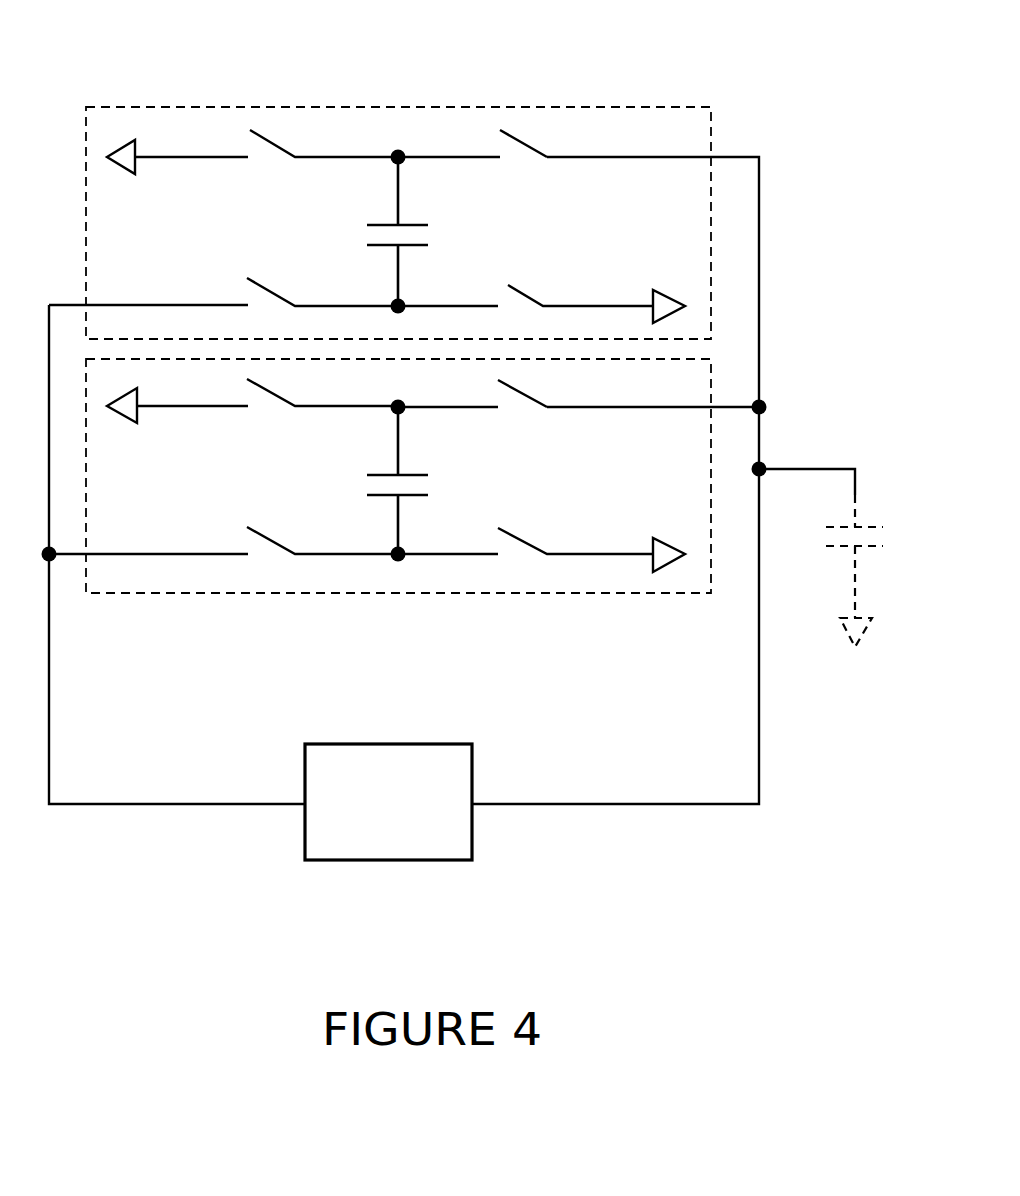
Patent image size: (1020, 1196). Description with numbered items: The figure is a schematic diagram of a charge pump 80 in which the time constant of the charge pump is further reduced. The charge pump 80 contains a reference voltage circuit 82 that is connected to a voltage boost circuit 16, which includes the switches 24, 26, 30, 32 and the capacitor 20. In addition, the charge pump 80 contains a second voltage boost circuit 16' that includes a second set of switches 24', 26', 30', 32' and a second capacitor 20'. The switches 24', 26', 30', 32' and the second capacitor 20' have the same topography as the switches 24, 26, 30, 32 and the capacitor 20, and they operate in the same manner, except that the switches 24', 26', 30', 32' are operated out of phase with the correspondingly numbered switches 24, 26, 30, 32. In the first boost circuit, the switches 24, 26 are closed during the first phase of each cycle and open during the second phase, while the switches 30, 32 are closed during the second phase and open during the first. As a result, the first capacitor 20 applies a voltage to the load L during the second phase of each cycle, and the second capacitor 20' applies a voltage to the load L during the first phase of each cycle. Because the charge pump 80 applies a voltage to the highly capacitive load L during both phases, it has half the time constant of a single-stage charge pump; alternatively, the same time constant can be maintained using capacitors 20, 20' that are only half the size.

The voltage boost circuit 16 is at (398, 186).
The second voltage boost circuit 16' is at (398, 509).
The capacitor 20 is at (423, 231).
The second capacitor 20' is at (437, 480).
The switch 24 is at (266, 132).
The switch 24' is at (267, 419).
The switch 26 is at (223, 285).
The switch 26' is at (223, 578).
The switch 30 is at (496, 134).
The switch 30' is at (485, 420).
The switch 32 is at (525, 268).
The switch 32' is at (525, 580).
The charge pump 80 is at (772, 82).
The reference voltage circuit 82 is at (473, 830).
The load L is at (873, 527).